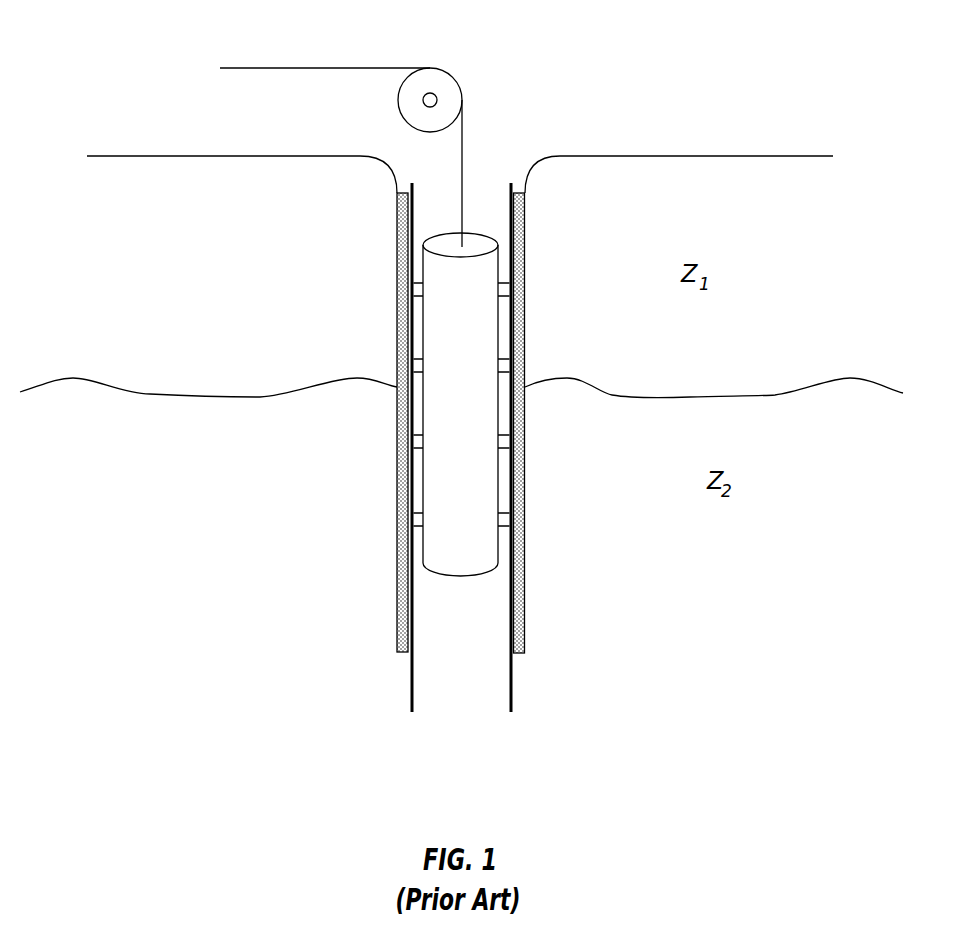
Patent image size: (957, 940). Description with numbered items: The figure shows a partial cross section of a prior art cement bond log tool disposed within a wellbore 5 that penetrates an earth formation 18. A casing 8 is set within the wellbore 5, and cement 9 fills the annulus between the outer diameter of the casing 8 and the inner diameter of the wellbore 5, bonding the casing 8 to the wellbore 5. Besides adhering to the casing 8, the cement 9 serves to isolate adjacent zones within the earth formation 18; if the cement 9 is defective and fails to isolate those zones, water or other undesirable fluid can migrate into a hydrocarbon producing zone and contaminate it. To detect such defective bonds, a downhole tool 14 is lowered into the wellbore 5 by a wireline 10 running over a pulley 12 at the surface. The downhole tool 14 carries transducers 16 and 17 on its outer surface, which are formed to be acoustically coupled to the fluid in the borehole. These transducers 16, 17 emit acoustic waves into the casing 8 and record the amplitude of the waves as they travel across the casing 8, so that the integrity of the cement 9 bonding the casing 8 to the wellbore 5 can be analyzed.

The wellbore 5 is at (537, 60).
The casing 8 is at (408, 700).
The cement 9 is at (402, 655).
The wireline 10 is at (263, 67).
The pulley 12 is at (398, 108).
The downhole tool 14 is at (485, 273).
The transducer 16 is at (503, 367).
The transducer 17 is at (503, 520).
The earth formation 18 is at (245, 254).